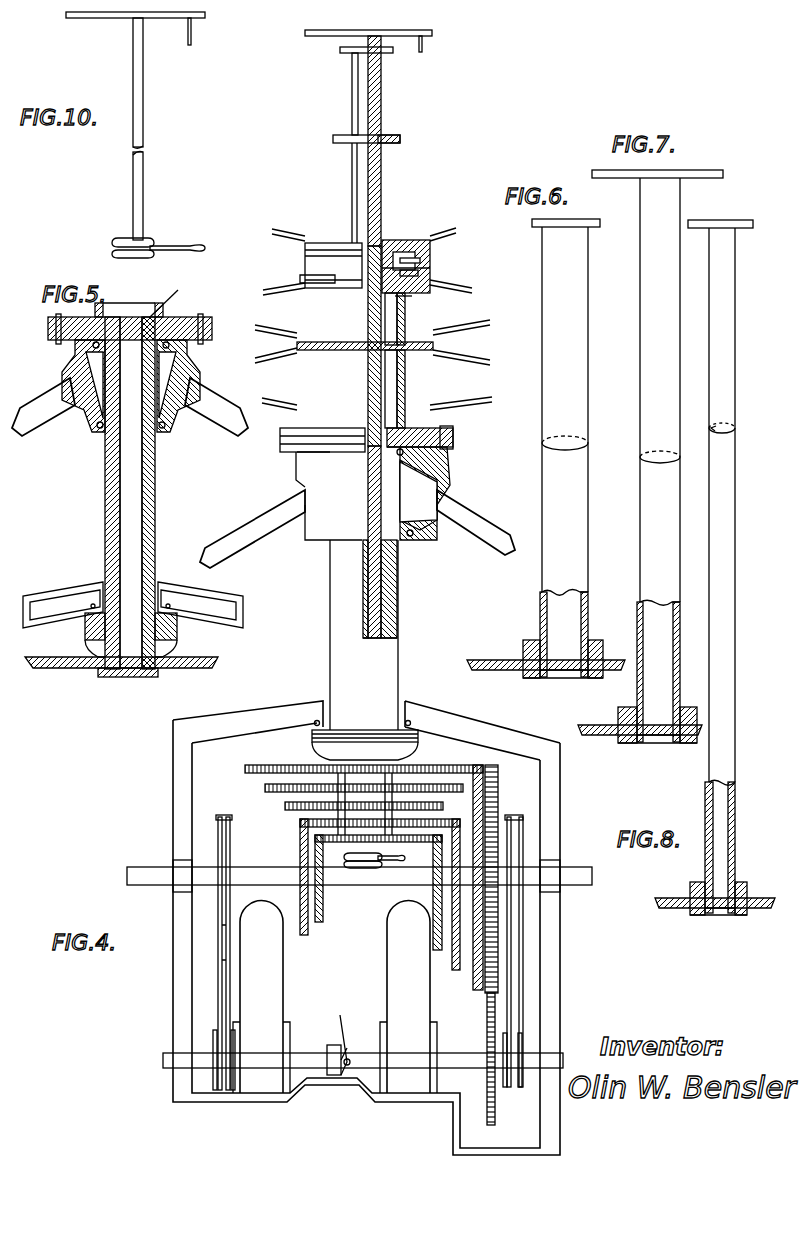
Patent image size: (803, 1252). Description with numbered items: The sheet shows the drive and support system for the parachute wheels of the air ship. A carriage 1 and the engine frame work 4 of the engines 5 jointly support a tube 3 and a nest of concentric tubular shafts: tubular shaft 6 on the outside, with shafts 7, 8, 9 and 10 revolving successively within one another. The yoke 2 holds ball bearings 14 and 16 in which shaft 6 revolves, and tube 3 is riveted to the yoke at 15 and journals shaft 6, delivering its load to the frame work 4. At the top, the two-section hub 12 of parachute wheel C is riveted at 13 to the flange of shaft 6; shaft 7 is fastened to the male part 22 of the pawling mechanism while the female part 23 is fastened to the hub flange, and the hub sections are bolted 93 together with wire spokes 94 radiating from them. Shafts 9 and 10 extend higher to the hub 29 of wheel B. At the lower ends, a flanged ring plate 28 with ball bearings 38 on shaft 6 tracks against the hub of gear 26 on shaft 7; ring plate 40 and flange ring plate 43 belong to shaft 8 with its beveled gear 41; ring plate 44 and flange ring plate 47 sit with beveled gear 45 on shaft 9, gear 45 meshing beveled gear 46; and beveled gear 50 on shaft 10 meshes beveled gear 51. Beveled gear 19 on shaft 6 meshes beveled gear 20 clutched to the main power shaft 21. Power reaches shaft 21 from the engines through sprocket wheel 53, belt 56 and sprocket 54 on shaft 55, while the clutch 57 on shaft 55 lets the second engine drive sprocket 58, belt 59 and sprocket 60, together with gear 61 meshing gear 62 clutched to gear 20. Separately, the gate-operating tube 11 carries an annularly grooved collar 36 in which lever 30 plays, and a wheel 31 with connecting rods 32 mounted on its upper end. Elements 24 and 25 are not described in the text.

In FIG. 5, the carriage 1 is at (230, 425).
In FIG. 4, the carriage 1 is at (476, 548).
In FIG. 5, the yoke 2 is at (210, 365).
In FIG. 4, the yoke 2 is at (478, 486).
In FIG. 5, the tube 3 is at (150, 493).
In FIG. 4, the tube 3 is at (397, 593).
In FIG. 5, the engine frame work 4 is at (60, 582).
In FIG. 4, the engine frame work 4 is at (262, 700).
In FIG. 4, the engine 5 is at (335, 997).
In FIG. 5, the tubular shaft 6 is at (116, 505).
In FIG. 4, the tubular shaft 6 is at (390, 612).
In FIG. 4, the tubular shaft 7 is at (385, 630).
In FIG. 6, the tubular shaft 7 is at (588, 340).
In FIG. 4, the tubular shaft 8 is at (405, 325).
In FIG. 7, the tubular shaft 8 is at (640, 442).
In FIG. 4, the tubular shaft 9 is at (381, 212).
In FIG. 8, the tubular shaft 9 is at (735, 520).
In FIG. 4, the tubular shaft 10 is at (381, 105).
In FIG. 10, the tube 11 is at (143, 135).
In FIG. 4, the tube 11 is at (368, 42).
In FIG. 5, the hub 12 is at (172, 295).
In FIG. 4, the hub 12 is at (405, 385).
In FIG. 5, the rivet connection 13 is at (208, 318).
In FIG. 4, the rivet connection 13 is at (453, 437).
In FIG. 5, the ball bearings 14 is at (200, 316).
In FIG. 4, the ball bearings 14 is at (438, 418).
In FIG. 5, the rivet connection 15 is at (162, 430).
In FIG. 4, the rivet connection 15 is at (405, 540).
In FIG. 5, the ball bearings 16 is at (146, 322).
In FIG. 4, the ball bearings 16 is at (420, 470).
In FIG. 5, the beveled gear 19 is at (55, 668).
In FIG. 4, the beveled gear 19 is at (280, 770).
In FIG. 4, the beveled gear 20 is at (492, 795).
In FIG. 4, the main power shaft 21 is at (575, 868).
In FIG. 4, the male part of pawling mechanism 22 is at (410, 260).
In FIG. 4, the female part of pawl 23 is at (430, 275).
In FIG. 4, the drum 24 is at (300, 378).
In FIG. 4, the blades 25 is at (278, 380).
In FIG. 4, the gear 26 is at (268, 787).
In FIG. 6, the gear 26 is at (485, 658).
In FIG. 5, the flanged ring plate 28 is at (104, 675).
In FIG. 6, the flanged ring plate 28 is at (530, 640).
In FIG. 4, the hub 29 is at (432, 310).
In FIG. 10, the lever 30 is at (183, 243).
In FIG. 4, the lever 30 is at (390, 862).
In FIG. 10, the wheel 31 is at (205, 15).
In FIG. 4, the wheel 31 is at (432, 33).
In FIG. 10, the connecting rods 32 is at (191, 33).
In FIG. 4, the connecting rods 32 is at (422, 44).
In FIG. 10, the annularly grooved collar 36 is at (116, 240).
In FIG. 4, the annularly grooved collar 36 is at (362, 868).
In FIG. 5, the ball bearings 38 is at (148, 677).
In FIG. 7, the ring plate 40 is at (625, 707).
In FIG. 4, the beveled gear 41 is at (288, 805).
In FIG. 7, the beveled gear 41 is at (590, 725).
In FIG. 7, the flange ring plate 43 is at (630, 743).
In FIG. 8, the ring plate 44 is at (745, 884).
In FIG. 4, the beveled gear 45 is at (310, 823).
In FIG. 8, the beveled gear 45 is at (665, 898).
In FIG. 4, the beveled gear 46 is at (304, 935).
In FIG. 8, the flange ring plate 47 is at (700, 915).
In FIG. 4, the beveled gear 50 is at (400, 842).
In FIG. 4, the beveled gear 51 is at (323, 920).
In FIG. 4, the sprocket wheel 53 is at (215, 906).
In FIG. 4, the sprocket 54 is at (215, 1092).
In FIG. 4, the shaft 55 is at (365, 1053).
In FIG. 4, the belt 56 is at (218, 992).
In FIG. 4, the clutch 57 is at (327, 1052).
In FIG. 4, the sprocket 58 is at (507, 1087).
In FIG. 4, the belt 59 is at (523, 975).
In FIG. 4, the sprocket 60 is at (523, 848).
In FIG. 4, the gear 61 is at (487, 1022).
In FIG. 4, the gear 62 is at (480, 820).
In FIG. 4, the bolts 93 is at (429, 203).
In FIG. 4, the wire spokes 94 is at (455, 235).